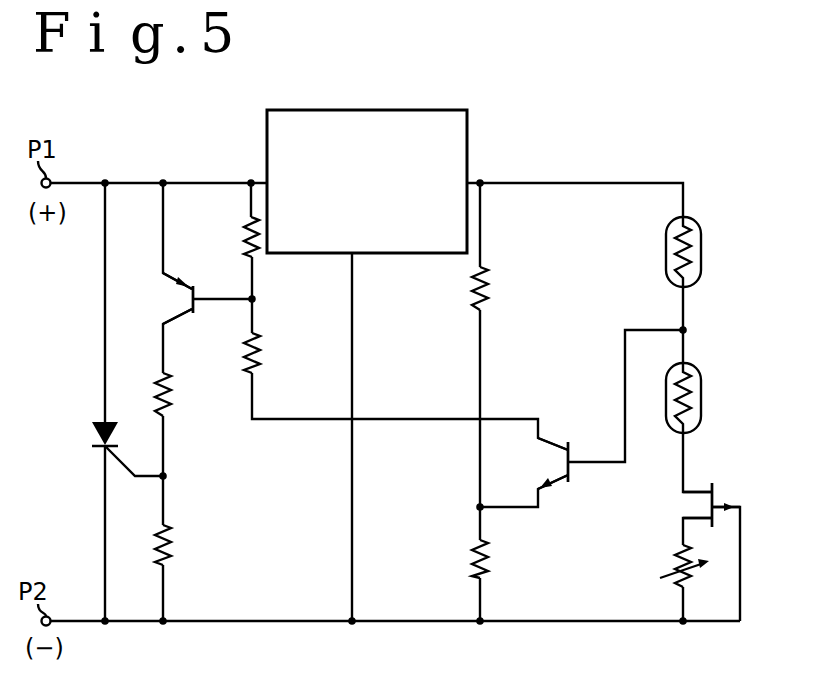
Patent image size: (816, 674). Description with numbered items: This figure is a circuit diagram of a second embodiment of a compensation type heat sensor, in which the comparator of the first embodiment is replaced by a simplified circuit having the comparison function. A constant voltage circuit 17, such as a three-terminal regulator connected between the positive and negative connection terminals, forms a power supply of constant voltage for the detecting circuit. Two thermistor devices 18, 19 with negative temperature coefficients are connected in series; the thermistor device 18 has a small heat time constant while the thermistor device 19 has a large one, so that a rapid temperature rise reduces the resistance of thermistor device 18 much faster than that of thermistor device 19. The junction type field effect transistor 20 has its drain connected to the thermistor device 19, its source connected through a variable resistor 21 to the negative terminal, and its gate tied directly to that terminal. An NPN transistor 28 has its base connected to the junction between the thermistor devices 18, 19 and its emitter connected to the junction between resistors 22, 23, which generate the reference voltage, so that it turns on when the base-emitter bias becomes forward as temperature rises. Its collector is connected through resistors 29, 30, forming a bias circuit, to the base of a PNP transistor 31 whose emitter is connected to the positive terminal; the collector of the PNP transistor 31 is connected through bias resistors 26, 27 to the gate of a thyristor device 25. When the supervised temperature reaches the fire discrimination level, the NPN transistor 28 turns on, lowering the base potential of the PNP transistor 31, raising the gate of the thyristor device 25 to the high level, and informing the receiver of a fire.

The constant voltage circuit 17 is at (378, 110).
The thermistor device 18 is at (704, 249).
The thermistor device 19 is at (704, 395).
The junction type field effect transistor 20 is at (714, 491).
The variable resistor 21 is at (666, 568).
The resistor 22 is at (491, 291).
The resistor 23 is at (491, 556).
The thyristor device 25 is at (100, 424).
The resistor 26 is at (173, 391).
The resistor 27 is at (173, 542).
The NPN transistor 28 is at (554, 444).
The resistor 29 is at (258, 258).
The resistor 30 is at (262, 358).
The PNP transistor 31 is at (184, 297).